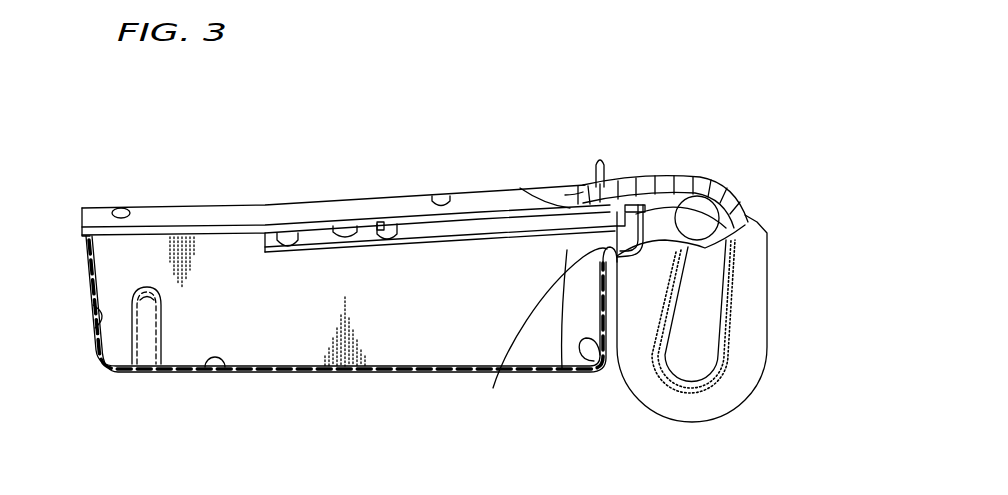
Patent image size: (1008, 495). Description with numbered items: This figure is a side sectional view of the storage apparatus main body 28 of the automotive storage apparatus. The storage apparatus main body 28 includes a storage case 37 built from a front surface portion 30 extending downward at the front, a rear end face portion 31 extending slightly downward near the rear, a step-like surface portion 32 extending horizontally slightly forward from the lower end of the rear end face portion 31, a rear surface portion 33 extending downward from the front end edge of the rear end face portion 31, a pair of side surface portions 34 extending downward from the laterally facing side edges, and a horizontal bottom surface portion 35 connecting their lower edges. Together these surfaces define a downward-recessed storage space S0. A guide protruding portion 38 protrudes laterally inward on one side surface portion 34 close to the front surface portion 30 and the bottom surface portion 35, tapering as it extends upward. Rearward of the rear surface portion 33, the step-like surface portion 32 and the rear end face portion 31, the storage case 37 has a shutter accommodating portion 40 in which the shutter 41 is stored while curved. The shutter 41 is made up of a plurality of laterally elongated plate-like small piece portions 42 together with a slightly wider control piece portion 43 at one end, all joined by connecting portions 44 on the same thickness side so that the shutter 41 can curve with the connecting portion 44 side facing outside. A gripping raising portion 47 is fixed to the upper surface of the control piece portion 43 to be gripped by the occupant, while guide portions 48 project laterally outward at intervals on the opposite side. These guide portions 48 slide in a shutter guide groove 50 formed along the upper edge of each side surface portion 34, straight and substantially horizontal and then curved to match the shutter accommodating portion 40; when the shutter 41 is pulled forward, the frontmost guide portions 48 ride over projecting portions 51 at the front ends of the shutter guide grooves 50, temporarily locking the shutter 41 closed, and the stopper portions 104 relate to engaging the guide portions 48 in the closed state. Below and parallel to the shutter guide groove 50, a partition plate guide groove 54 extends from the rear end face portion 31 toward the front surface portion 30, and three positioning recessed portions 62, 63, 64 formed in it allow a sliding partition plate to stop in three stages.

The storage apparatus main body 28 is at (298, 186).
The front surface portion 30 is at (95, 330).
The rear end face portion 31 is at (493, 388).
The step-like surface portion 32 is at (562, 368).
The rear surface portion 33 is at (588, 370).
The side surface portions 34 is at (278, 325).
The bottom surface portion 35 is at (223, 372).
The storage case 37 is at (179, 382).
The guide protruding portion 38 is at (146, 353).
The shutter accommodating portion 40 is at (764, 330).
The shutter 41 is at (683, 175).
The small piece portions 42 is at (653, 182).
The control piece portion 43 is at (584, 188).
The connecting portions 44 is at (637, 186).
The gripping raising portion 47 is at (601, 160).
The guide portions 48 is at (692, 242).
The shutter guide groove 50 is at (452, 200).
The projecting portions 51 is at (127, 210).
The partition plate guide groove 54 is at (355, 236).
The positioning recessed portion 62 is at (282, 242).
The positioning recessed portion 63 is at (399, 236).
The positioning recessed portion 64 is at (540, 195).
The stopper portions 104 is at (596, 187).
The storage space S0 is at (407, 326).